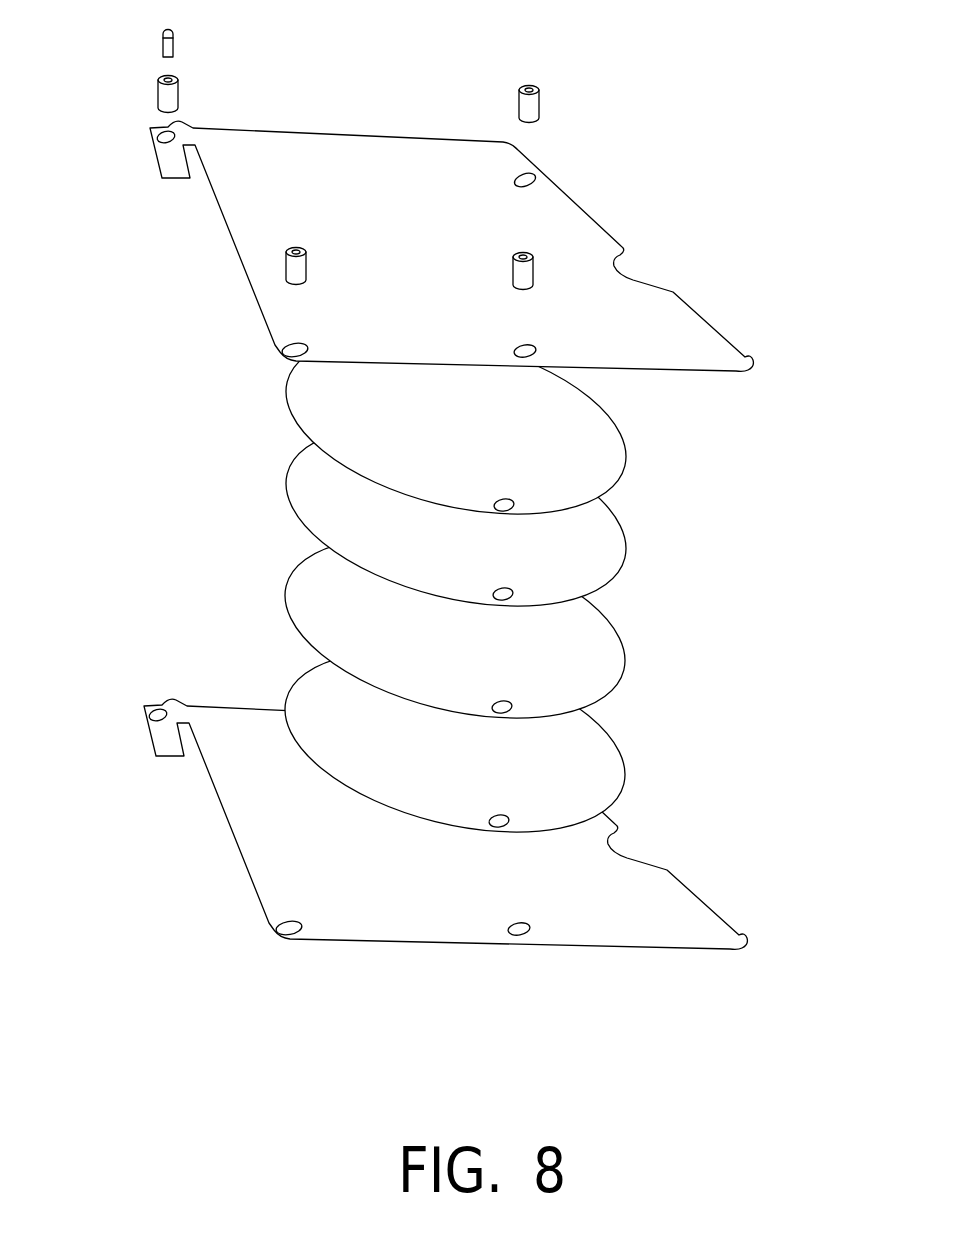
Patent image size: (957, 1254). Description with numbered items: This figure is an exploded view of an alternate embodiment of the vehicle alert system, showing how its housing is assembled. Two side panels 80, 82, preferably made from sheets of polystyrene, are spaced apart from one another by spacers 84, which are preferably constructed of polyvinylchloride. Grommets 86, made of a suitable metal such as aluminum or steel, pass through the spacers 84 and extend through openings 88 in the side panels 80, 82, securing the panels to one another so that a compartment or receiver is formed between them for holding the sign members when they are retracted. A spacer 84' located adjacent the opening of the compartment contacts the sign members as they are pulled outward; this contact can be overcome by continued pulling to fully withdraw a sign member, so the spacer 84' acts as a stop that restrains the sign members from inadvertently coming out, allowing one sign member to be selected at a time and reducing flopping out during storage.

The side panel 80 is at (754, 361).
The side panel 82 is at (637, 935).
The spacer 84 is at (378, 199).
The spacer 84' is at (571, 106).
The grommet 86 is at (175, 38).
The opening 88 is at (150, 128).